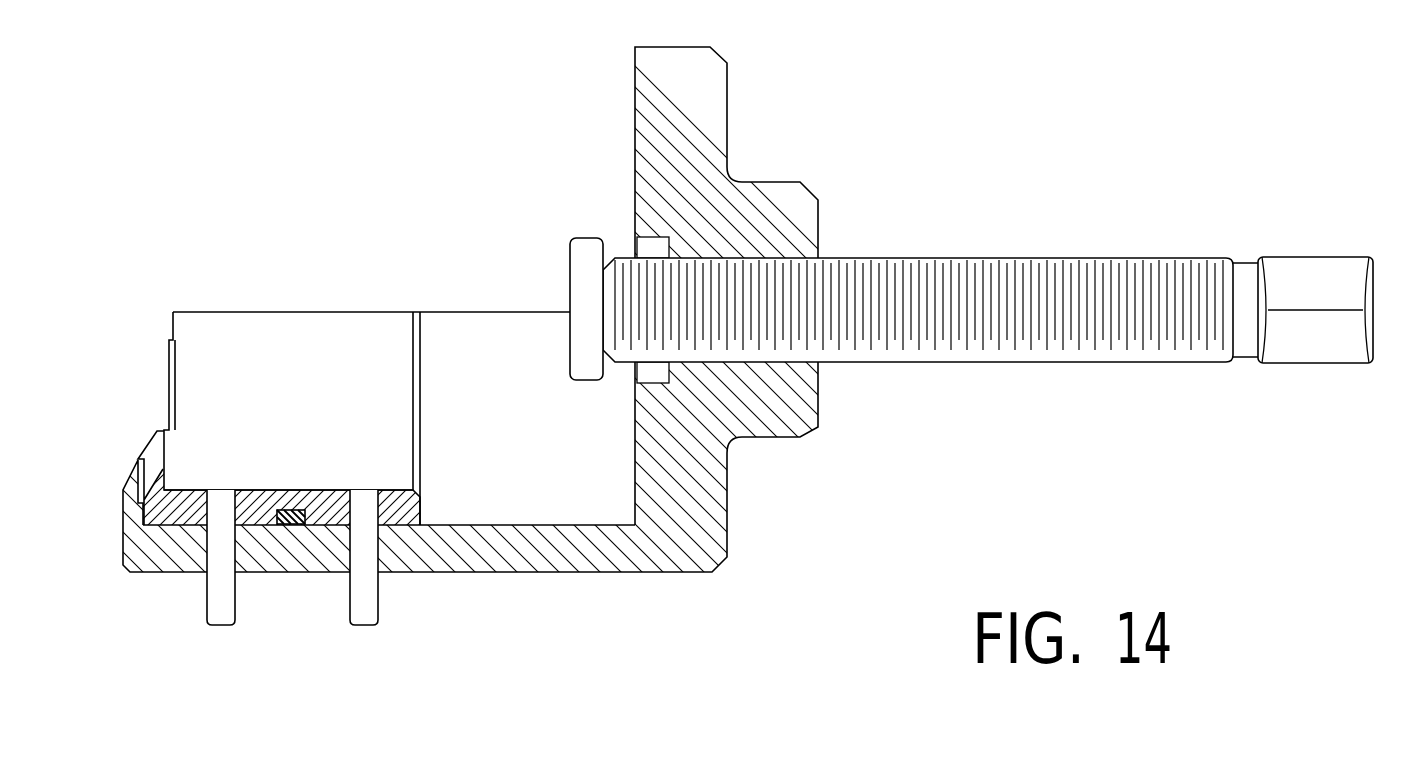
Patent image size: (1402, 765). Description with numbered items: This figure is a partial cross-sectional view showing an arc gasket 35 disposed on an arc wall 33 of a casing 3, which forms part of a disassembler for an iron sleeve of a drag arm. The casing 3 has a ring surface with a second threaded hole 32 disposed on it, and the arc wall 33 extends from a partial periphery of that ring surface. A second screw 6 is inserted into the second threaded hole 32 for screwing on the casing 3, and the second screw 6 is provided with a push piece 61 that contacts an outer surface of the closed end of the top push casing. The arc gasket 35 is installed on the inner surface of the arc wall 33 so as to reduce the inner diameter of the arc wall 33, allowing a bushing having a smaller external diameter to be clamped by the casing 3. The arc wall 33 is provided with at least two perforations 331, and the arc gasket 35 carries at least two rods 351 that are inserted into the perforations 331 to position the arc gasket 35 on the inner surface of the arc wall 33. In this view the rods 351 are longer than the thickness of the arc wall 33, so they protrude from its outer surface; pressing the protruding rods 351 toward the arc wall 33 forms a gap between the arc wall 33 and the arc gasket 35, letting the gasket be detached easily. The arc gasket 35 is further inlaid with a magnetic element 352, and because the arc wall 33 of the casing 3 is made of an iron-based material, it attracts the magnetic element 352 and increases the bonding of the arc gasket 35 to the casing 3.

The casing 3 is at (511, 382).
The second threaded hole 32 is at (748, 257).
The arc wall 33 is at (425, 550).
The perforations 331 is at (380, 528).
The arc gasket 35 is at (280, 469).
The rods 351 is at (363, 617).
The magnetic element 352 is at (293, 527).
The second screw 6 is at (961, 265).
The push piece 61 is at (585, 240).